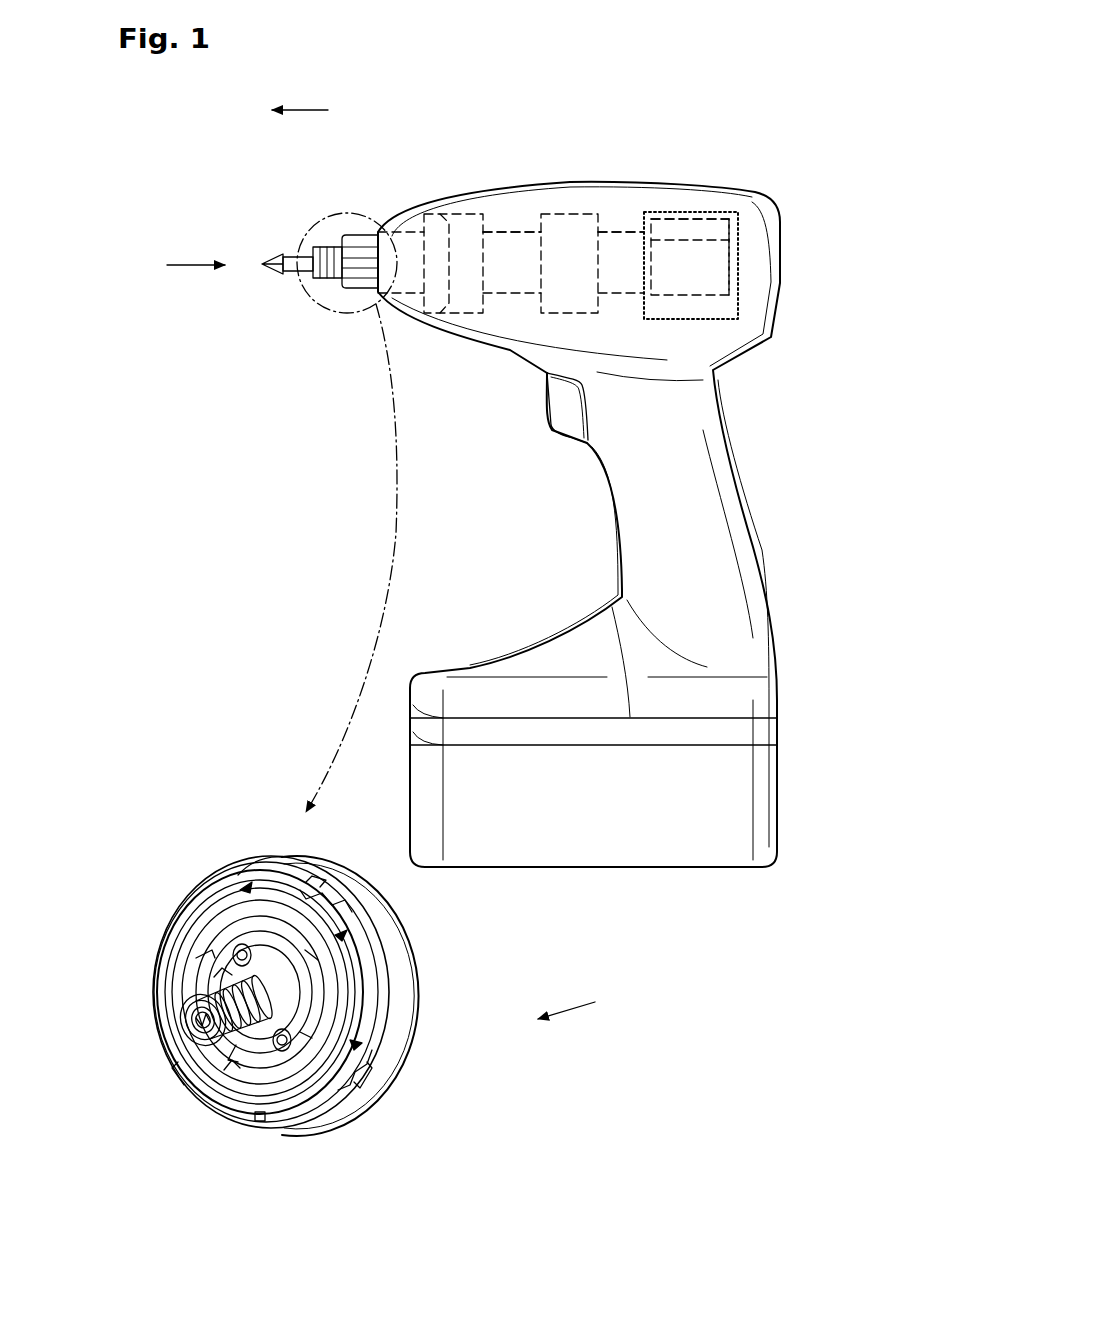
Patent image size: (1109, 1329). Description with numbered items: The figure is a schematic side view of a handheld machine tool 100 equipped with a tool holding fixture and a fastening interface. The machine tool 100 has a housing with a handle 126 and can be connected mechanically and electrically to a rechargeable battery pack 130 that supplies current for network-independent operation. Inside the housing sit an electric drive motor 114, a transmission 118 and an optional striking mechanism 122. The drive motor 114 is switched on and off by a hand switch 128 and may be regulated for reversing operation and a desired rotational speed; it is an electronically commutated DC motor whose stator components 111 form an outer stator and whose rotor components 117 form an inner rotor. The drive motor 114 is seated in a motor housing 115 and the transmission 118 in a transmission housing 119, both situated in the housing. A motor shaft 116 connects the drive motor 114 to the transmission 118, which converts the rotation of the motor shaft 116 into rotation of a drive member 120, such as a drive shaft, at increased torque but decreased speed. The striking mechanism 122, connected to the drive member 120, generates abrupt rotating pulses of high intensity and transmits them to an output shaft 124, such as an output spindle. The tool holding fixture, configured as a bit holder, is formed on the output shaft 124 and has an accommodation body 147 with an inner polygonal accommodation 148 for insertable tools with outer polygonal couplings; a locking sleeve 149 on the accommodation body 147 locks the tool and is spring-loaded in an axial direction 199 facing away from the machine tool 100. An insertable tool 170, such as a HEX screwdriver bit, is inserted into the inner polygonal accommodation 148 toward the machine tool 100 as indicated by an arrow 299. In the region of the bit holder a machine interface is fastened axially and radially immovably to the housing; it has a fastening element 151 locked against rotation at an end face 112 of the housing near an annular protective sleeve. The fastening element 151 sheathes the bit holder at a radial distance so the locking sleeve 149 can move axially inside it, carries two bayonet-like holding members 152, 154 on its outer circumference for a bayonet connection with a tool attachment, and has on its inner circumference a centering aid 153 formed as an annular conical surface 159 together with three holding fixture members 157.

The handheld machine tool 100 is at (762, 120).
The stator components 111 is at (700, 212).
The end face 112 is at (301, 1112).
The drive motor 114 is at (712, 244).
The motor housing 115 is at (738, 271).
The motor shaft 116 is at (632, 240).
The rotor components 117 is at (737, 220).
The transmission 118 is at (558, 217).
The transmission housing 119 is at (620, 240).
The drive member 120 is at (503, 232).
The striking mechanism 122 is at (467, 220).
The output shaft 124 is at (413, 232).
The handle 126 is at (757, 607).
The hand switch 128 is at (567, 408).
The rechargeable battery pack 130 is at (757, 765).
The accommodation body 147 is at (176, 1019).
The inner polygonal accommodation 148 is at (178, 1040).
The locking sleeve 149 is at (212, 1062).
The fastening element 151 is at (305, 980).
The holding member 152 is at (207, 935).
The centering aid 153 is at (170, 987).
The holding member 154 is at (257, 1118).
The holding fixture members 157 is at (225, 983).
The annular conical surface 159 is at (296, 1021).
The insertable tool 170 is at (283, 272).
The axial direction 199 is at (297, 108).
The arrow 299 is at (192, 268).